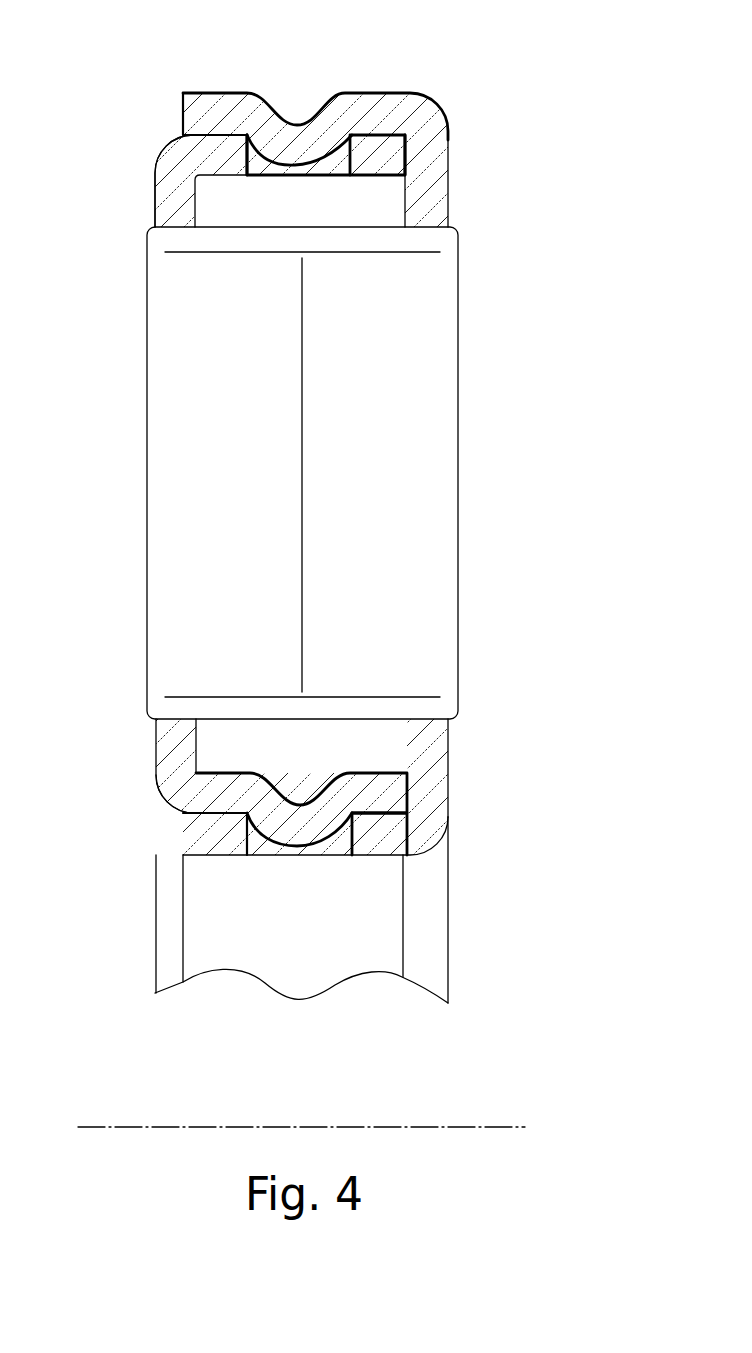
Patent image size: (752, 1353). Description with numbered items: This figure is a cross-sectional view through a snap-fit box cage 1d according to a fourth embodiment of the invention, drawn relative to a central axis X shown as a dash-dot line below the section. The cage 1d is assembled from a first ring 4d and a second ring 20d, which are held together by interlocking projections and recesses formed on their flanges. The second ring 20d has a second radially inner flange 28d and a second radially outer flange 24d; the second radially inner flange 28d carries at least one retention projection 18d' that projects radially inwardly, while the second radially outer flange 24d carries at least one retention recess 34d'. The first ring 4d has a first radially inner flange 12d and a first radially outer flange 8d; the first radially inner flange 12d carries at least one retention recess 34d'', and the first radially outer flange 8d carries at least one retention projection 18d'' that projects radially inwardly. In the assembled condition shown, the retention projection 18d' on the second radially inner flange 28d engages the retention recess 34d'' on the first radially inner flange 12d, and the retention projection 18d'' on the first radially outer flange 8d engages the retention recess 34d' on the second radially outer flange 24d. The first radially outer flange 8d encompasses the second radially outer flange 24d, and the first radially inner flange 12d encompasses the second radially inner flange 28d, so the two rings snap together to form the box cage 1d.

The snap-fit box cage 1d is at (468, 162).
The first ring 4d is at (430, 740).
The first radially outer flange 8d is at (393, 112).
The first radially inner flange 12d is at (375, 838).
The retention projection 18d' is at (286, 878).
The retention projection 18d'' is at (305, 87).
The second ring 20d is at (158, 192).
The second radially outer flange 24d is at (200, 162).
The second radially inner flange 28d is at (217, 795).
The retention recess 34d' is at (237, 92).
The retention recess 34d'' is at (363, 879).
The axis of rotation X is at (485, 1125).